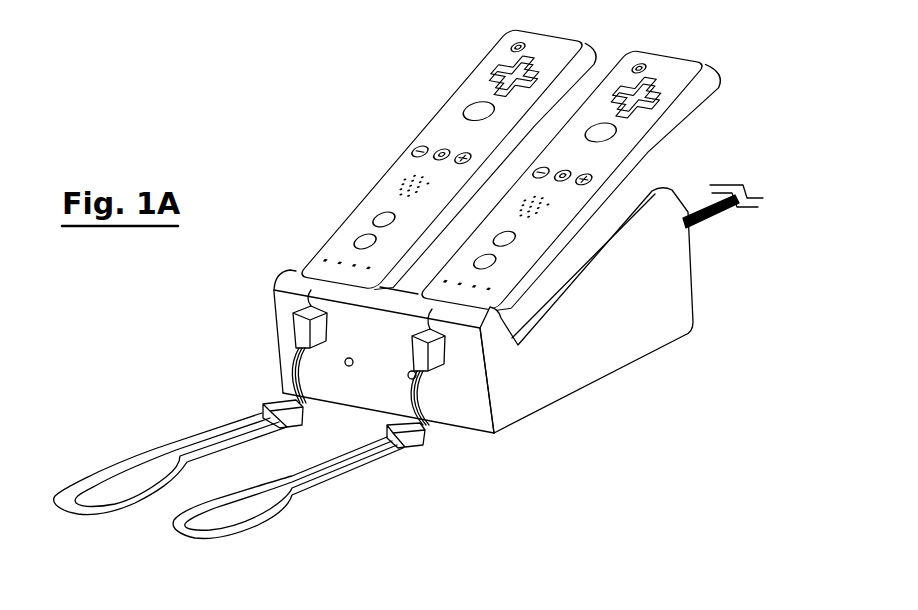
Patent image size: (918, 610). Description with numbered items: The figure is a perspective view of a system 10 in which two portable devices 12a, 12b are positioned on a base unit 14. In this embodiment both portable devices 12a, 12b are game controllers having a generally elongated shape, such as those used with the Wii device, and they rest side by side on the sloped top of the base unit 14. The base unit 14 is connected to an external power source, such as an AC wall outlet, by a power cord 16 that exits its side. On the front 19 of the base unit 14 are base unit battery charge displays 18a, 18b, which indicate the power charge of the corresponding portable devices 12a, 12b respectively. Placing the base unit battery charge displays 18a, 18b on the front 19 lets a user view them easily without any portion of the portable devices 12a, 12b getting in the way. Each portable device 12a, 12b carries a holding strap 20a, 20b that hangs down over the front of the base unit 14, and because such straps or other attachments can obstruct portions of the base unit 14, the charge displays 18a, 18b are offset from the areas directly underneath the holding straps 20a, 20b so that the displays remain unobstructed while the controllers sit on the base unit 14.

The system 10 is at (377, 132).
The portable device 12a is at (474, 88).
The portable device 12b is at (687, 84).
The base unit 14 is at (653, 307).
The power cord 16 is at (717, 210).
The base unit battery charge display 18a is at (347, 368).
The base unit battery charge display 18b is at (409, 378).
The front 19 is at (463, 397).
The holding strap 20a is at (178, 438).
The holding strap 20b is at (323, 482).